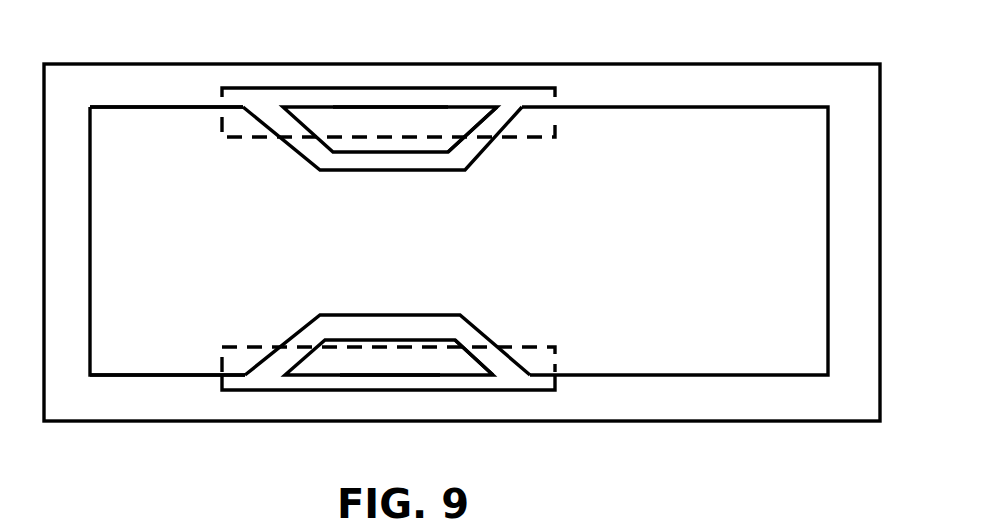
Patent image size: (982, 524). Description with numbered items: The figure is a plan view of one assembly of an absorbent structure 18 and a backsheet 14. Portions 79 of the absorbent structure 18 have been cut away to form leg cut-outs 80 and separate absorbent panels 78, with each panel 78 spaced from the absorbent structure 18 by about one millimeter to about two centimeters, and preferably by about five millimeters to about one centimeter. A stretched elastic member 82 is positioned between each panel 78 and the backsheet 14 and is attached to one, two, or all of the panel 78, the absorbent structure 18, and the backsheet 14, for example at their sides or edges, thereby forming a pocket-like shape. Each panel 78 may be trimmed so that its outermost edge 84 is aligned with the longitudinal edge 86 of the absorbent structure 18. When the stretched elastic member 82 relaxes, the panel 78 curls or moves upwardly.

The backsheet 14 is at (636, 62).
The absorbent structure 18 is at (716, 143).
The absorbent panel 78 is at (465, 112).
The portions 79 is at (346, 115).
The leg cut-out 80 is at (273, 108).
The stretched elastic member 82 is at (527, 100).
The outermost edge 84 is at (398, 108).
The longitudinal edge 86 is at (138, 107).